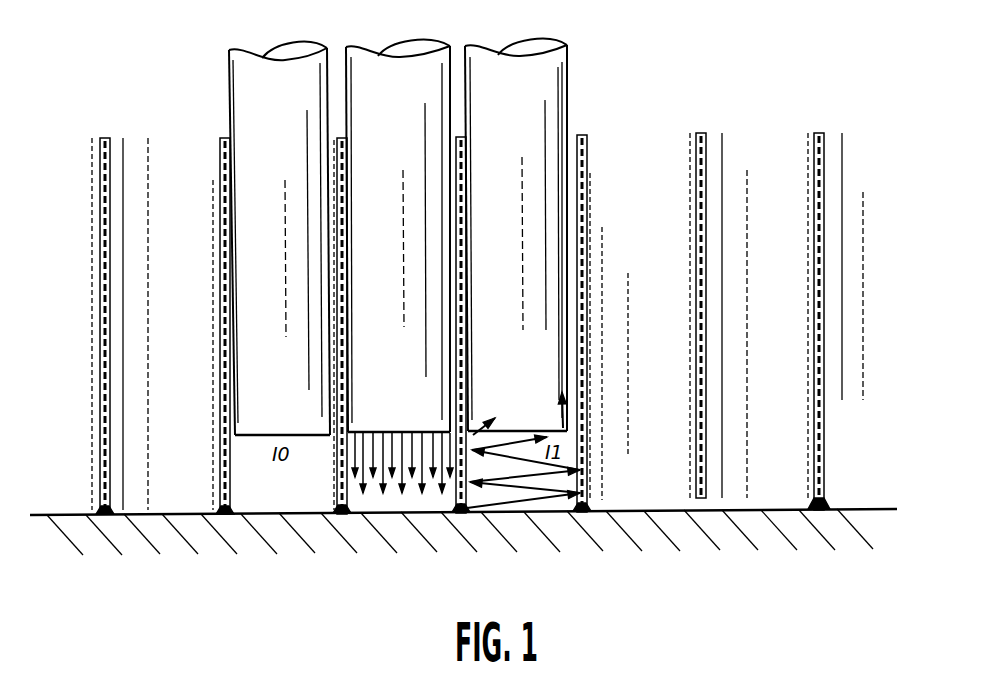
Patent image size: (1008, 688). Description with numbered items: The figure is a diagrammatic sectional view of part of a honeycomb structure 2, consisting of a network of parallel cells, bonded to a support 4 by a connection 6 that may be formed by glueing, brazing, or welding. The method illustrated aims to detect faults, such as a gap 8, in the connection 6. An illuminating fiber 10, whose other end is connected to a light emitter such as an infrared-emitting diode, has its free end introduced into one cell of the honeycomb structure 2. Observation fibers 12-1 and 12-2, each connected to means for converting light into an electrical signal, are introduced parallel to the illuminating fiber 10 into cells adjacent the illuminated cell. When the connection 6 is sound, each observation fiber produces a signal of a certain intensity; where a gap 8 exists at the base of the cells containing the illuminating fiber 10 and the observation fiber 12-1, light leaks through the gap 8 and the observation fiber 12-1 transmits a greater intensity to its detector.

The honeycomb structure 2 is at (817, 182).
The support 4 is at (753, 537).
The connection 6 is at (862, 442).
The gap 8 is at (477, 512).
The illuminating fiber 10 is at (382, 58).
The observation fiber 12-1 is at (490, 63).
The observation fiber 12-2 is at (247, 60).